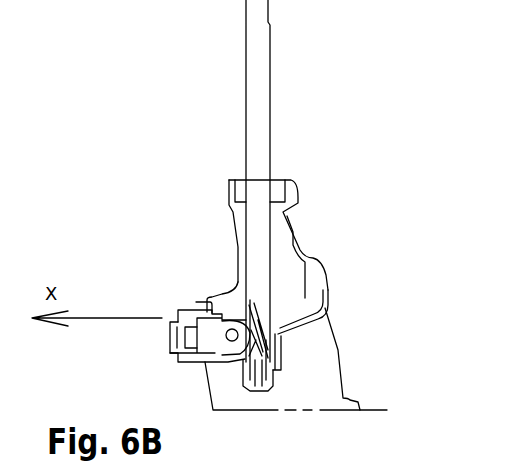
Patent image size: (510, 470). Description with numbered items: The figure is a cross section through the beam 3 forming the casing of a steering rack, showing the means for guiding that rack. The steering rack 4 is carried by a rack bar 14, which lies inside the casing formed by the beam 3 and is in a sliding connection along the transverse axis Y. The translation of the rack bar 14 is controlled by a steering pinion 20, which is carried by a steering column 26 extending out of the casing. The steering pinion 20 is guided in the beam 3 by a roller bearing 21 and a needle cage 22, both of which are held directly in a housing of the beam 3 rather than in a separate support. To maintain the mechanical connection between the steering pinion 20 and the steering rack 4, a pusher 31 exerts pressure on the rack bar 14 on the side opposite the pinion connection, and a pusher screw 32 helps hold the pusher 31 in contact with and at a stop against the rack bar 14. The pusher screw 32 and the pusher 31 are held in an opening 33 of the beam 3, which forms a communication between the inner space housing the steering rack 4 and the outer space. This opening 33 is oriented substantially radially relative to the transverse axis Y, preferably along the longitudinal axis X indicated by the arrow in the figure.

The transverse beam 3 is at (298, 385).
The steering rack 4 is at (217, 366).
The rack bar 14 is at (233, 301).
The steering pinion 20 is at (330, 320).
The roller bearing 21 is at (277, 193).
The needle cage 22 is at (258, 388).
The steering column 26 is at (273, 6).
The pusher 31 is at (208, 362).
The pusher screw 32 is at (170, 335).
The opening 33 is at (196, 298).